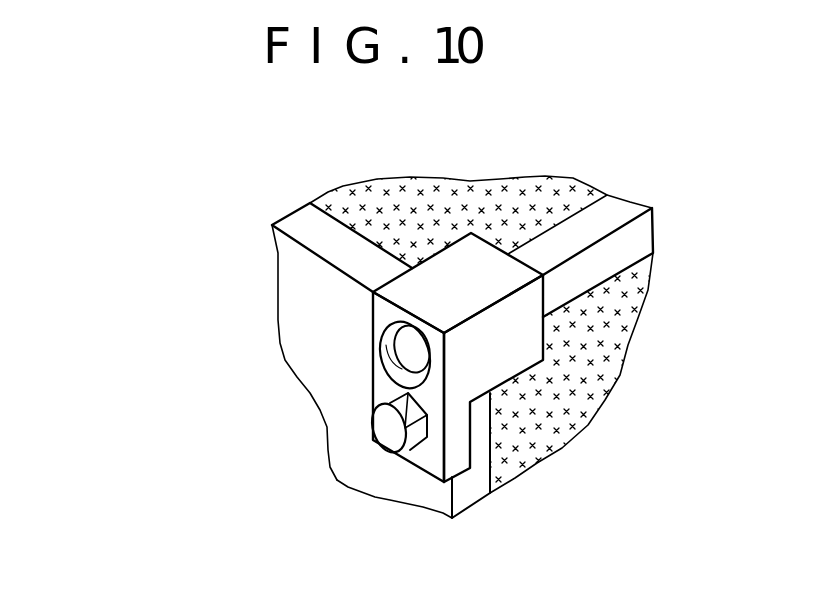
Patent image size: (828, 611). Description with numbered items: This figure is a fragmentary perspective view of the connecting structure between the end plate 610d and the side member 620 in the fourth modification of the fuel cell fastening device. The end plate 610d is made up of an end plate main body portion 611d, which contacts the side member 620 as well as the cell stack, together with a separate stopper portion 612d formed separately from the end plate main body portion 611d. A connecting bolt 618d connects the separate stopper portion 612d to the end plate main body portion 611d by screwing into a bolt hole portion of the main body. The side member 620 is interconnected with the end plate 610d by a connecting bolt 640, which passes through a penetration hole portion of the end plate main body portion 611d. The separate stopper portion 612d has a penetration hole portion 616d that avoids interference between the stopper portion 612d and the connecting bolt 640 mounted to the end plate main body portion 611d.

The end plate 610d is at (307, 353).
The end plate main body portion 611d is at (351, 357).
The separate stopper portion 612d is at (248, 352).
The penetration hole portion 616d is at (299, 354).
The connecting bolt 618d is at (322, 465).
The side member 620 is at (462, 202).
The connecting bolt 640 is at (299, 315).